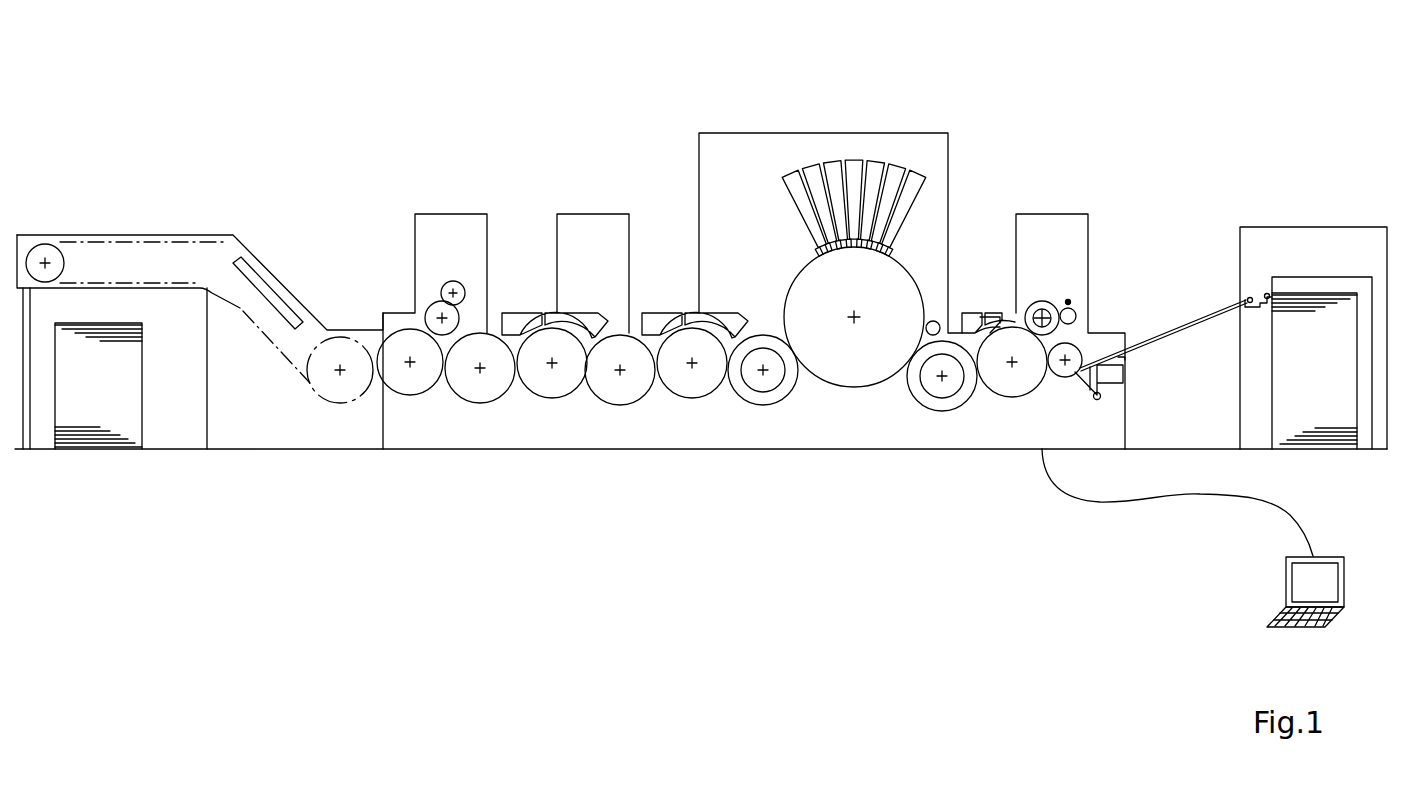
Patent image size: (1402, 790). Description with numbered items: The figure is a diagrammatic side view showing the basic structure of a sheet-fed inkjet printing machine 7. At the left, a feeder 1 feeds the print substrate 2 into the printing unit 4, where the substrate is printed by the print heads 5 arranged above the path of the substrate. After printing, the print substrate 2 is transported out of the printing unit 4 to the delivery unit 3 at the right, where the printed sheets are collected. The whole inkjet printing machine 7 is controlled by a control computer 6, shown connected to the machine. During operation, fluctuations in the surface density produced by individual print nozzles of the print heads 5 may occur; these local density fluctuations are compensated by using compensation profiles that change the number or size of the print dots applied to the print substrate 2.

The feeder 1 is at (133, 262).
The print substrate 2 is at (909, 268).
The delivery unit 3 is at (1325, 293).
The printing unit 4 is at (760, 133).
The print heads 5 is at (855, 160).
The control computer 6 is at (1286, 583).
The inkjet printing machine 7 is at (1172, 52).